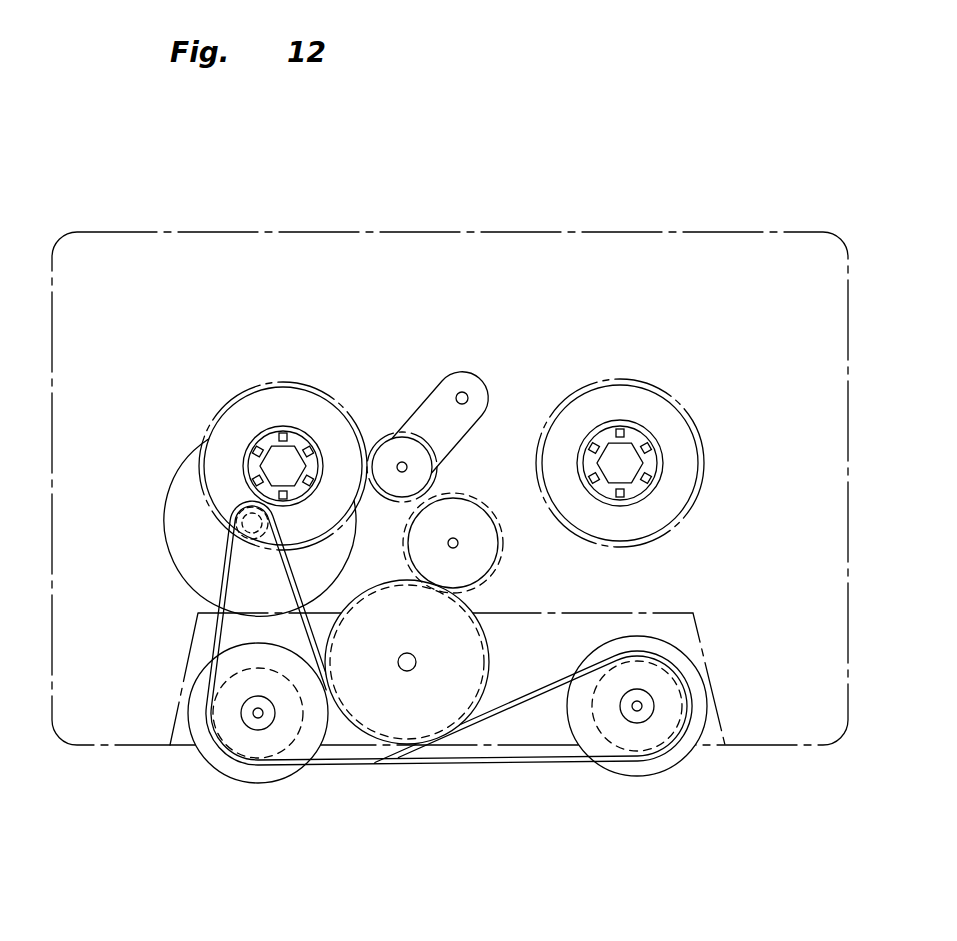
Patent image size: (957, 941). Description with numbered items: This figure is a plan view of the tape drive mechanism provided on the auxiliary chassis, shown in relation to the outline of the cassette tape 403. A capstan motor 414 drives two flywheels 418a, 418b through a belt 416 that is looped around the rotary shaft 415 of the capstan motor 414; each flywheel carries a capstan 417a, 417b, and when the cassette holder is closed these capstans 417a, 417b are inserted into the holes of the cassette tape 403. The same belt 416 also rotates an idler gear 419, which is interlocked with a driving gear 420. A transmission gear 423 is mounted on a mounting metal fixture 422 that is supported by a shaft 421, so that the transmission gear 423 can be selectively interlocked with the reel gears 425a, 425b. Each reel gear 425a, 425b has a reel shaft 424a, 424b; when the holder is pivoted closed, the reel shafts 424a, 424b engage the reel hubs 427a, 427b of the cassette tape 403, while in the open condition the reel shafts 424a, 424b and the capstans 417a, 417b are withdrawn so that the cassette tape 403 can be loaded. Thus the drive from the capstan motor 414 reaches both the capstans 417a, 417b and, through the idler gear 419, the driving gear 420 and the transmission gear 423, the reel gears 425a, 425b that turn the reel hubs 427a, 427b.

The tape cassette 403 is at (793, 708).
The capstan motor 414 is at (188, 570).
The rotary shaft of the capstan motor 415 is at (238, 522).
The belt 416 is at (443, 768).
The capstan 417a is at (263, 722).
The capstan 417b is at (641, 712).
The flywheel 418a is at (243, 772).
The flywheel 418b is at (632, 770).
The idler gear 419 is at (463, 653).
The driving gear 420 is at (483, 553).
The shaft 421 is at (465, 392).
The mounting metal fixture 422 is at (427, 422).
The transmission gear 423 is at (418, 470).
The reel shaft 424a is at (278, 466).
The reel shaft 424b is at (612, 458).
The reel gear 425a is at (250, 413).
The reel gear 425b is at (685, 420).
The reel hub 427a is at (297, 423).
The reel hub 427b is at (665, 488).